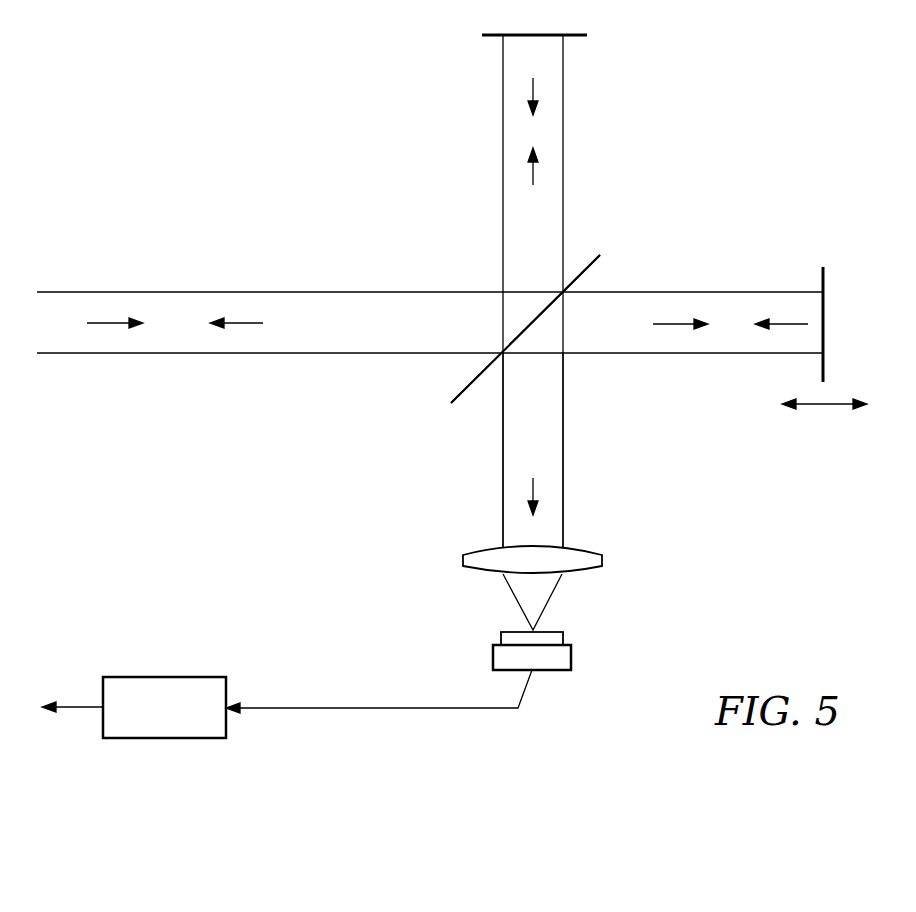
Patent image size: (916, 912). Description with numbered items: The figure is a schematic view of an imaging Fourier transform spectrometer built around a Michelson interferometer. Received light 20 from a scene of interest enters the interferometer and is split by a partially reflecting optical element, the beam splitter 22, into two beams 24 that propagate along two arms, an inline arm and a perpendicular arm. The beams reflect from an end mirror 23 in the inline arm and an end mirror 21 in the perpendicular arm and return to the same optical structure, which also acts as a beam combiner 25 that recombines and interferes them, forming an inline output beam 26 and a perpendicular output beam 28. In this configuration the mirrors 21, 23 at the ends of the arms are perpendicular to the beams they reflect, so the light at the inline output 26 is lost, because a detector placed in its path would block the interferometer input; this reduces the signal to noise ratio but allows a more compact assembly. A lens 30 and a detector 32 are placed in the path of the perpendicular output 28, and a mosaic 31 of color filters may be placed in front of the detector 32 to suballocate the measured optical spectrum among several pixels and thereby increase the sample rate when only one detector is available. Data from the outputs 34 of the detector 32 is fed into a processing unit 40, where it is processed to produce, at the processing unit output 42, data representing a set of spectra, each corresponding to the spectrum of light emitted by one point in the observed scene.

The received light 20 is at (100, 315).
The end mirror in the perpendicular arm 21 is at (493, 37).
The beam splitter 22 is at (593, 255).
The end mirror in the inline arm 23 is at (826, 278).
The two beams 24 is at (555, 162).
The beam combiner 25 is at (525, 329).
The inline output beam 26 is at (237, 315).
The perpendicular output beam 28 is at (550, 457).
The lens 30 is at (603, 558).
The mosaic of color filters 31 is at (501, 638).
The detector 32 is at (571, 652).
The outputs of the detectors 34 is at (394, 751).
The processing unit 40 is at (200, 676).
The processing unit output 42 is at (85, 705).